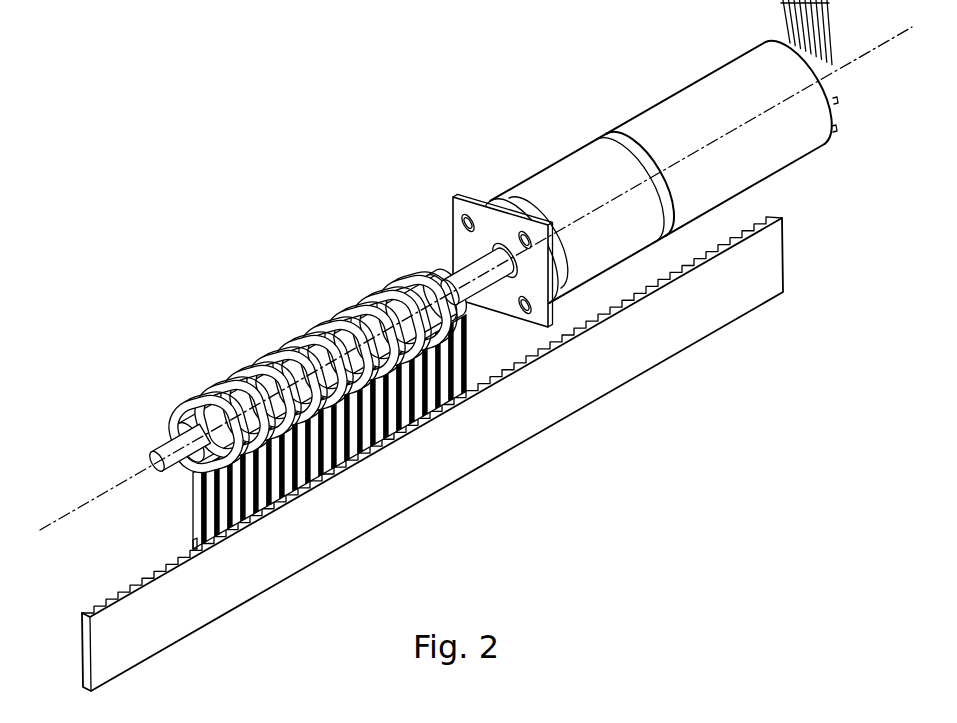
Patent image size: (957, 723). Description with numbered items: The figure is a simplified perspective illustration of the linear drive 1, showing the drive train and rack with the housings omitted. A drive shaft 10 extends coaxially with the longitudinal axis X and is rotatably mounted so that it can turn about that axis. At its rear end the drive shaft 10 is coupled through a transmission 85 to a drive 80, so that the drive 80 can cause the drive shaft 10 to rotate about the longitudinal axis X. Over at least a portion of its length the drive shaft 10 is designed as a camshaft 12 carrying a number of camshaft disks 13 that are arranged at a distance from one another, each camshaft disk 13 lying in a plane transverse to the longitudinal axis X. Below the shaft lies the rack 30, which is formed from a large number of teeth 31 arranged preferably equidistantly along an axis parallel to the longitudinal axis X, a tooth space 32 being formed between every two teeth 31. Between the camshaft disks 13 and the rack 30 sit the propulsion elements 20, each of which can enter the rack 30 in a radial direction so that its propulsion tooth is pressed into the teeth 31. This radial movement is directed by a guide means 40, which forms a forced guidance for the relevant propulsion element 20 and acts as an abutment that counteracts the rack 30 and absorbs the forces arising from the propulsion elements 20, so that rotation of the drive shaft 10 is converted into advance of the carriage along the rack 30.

The linear drive 1 is at (350, 101).
The drive shaft 10 is at (160, 437).
The camshaft 12 is at (186, 428).
The camshaft disks 13 is at (186, 428).
The propulsion element 20 is at (207, 498).
The rack 30 is at (413, 454).
The teeth 31 is at (104, 600).
The tooth space 32 is at (160, 580).
The guide means 40 is at (193, 535).
The drive 80 is at (670, 102).
The transmission 85 is at (587, 170).
The longitudinal axis X is at (760, 117).